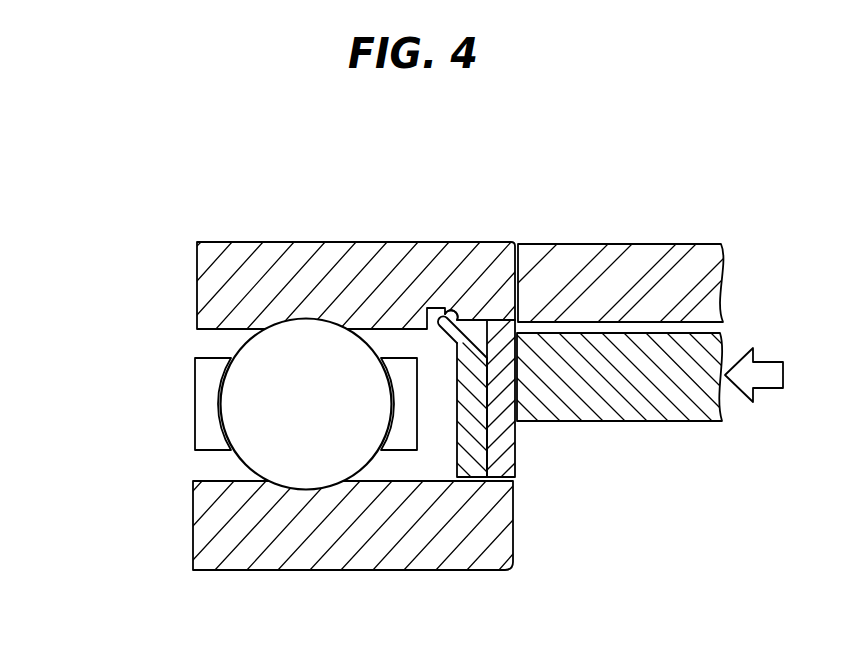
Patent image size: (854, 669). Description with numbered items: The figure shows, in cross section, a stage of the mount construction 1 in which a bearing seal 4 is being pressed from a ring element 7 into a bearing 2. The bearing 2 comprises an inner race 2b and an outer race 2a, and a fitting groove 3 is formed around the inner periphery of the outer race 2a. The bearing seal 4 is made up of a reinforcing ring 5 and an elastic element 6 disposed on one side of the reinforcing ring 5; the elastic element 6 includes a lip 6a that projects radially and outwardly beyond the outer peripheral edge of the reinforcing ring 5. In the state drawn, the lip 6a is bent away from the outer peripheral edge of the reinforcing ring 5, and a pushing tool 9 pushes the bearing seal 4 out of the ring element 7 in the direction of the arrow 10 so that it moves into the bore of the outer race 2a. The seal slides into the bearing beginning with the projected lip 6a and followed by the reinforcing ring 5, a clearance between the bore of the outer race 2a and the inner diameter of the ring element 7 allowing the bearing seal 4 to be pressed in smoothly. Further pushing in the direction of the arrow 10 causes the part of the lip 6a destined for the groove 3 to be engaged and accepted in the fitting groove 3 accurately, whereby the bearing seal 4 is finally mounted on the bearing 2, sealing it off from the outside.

The mount construction 1 is at (270, 353).
The bearing 2 is at (270, 406).
The outer race 2a is at (307, 285).
The inner race 2b is at (305, 525).
The fitting groove 3 is at (443, 303).
The bearing seal 4 is at (516, 410).
The reinforcing ring 5 is at (523, 310).
The elastic element 6 is at (476, 412).
The lip 6a is at (460, 313).
The ring element 7 is at (577, 260).
The pushing tool 9 is at (622, 403).
The arrow 10 is at (767, 383).